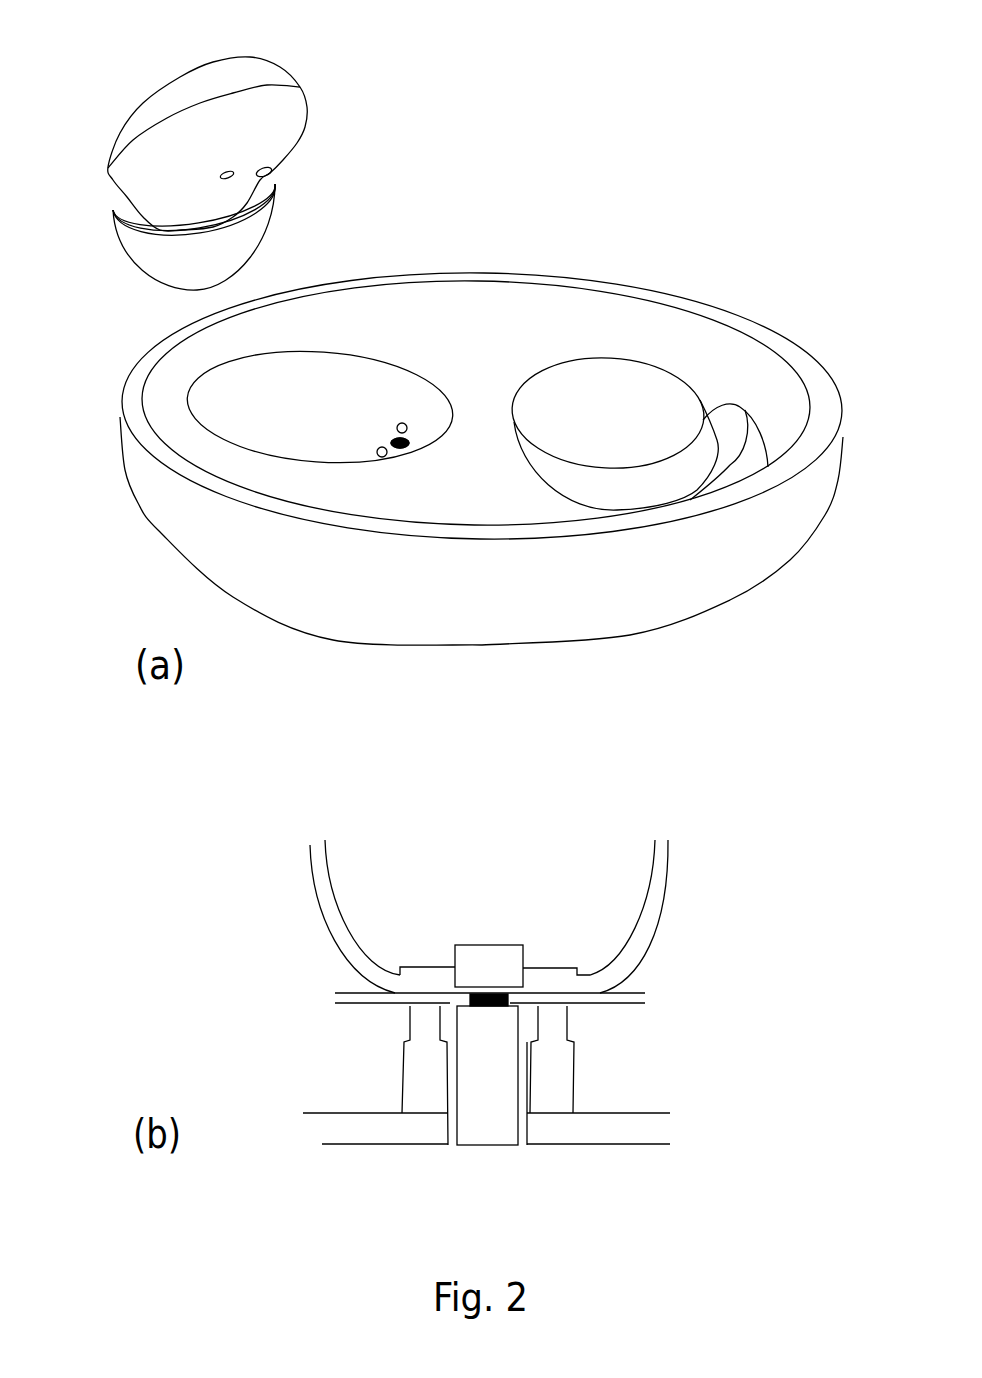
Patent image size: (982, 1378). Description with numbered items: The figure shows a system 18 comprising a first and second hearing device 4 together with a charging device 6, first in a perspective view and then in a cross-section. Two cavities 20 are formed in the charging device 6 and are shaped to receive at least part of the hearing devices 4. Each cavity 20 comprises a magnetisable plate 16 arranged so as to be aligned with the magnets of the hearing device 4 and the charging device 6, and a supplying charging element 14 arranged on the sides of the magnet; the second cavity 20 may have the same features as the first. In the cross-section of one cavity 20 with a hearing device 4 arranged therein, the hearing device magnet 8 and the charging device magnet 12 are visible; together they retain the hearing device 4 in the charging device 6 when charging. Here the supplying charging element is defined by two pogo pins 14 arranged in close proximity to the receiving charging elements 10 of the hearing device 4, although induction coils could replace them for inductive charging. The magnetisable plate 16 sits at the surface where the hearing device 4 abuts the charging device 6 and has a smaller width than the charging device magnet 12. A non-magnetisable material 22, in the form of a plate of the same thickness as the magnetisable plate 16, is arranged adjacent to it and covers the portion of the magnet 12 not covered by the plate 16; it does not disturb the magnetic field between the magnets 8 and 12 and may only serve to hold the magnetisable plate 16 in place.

The hearing device 4 is at (187, 93).
The charging device 6 is at (590, 1127).
The hearing device magnet 8 is at (490, 953).
The receiving charging element 10 is at (425, 973).
The charging device magnet 12 is at (478, 1118).
The supplying charging element 14 is at (390, 455).
The magnetisable plate 16 is at (393, 435).
The system 18 is at (625, 154).
The cavity 20 is at (218, 393).
The non-magnetisable material 22 is at (447, 998).